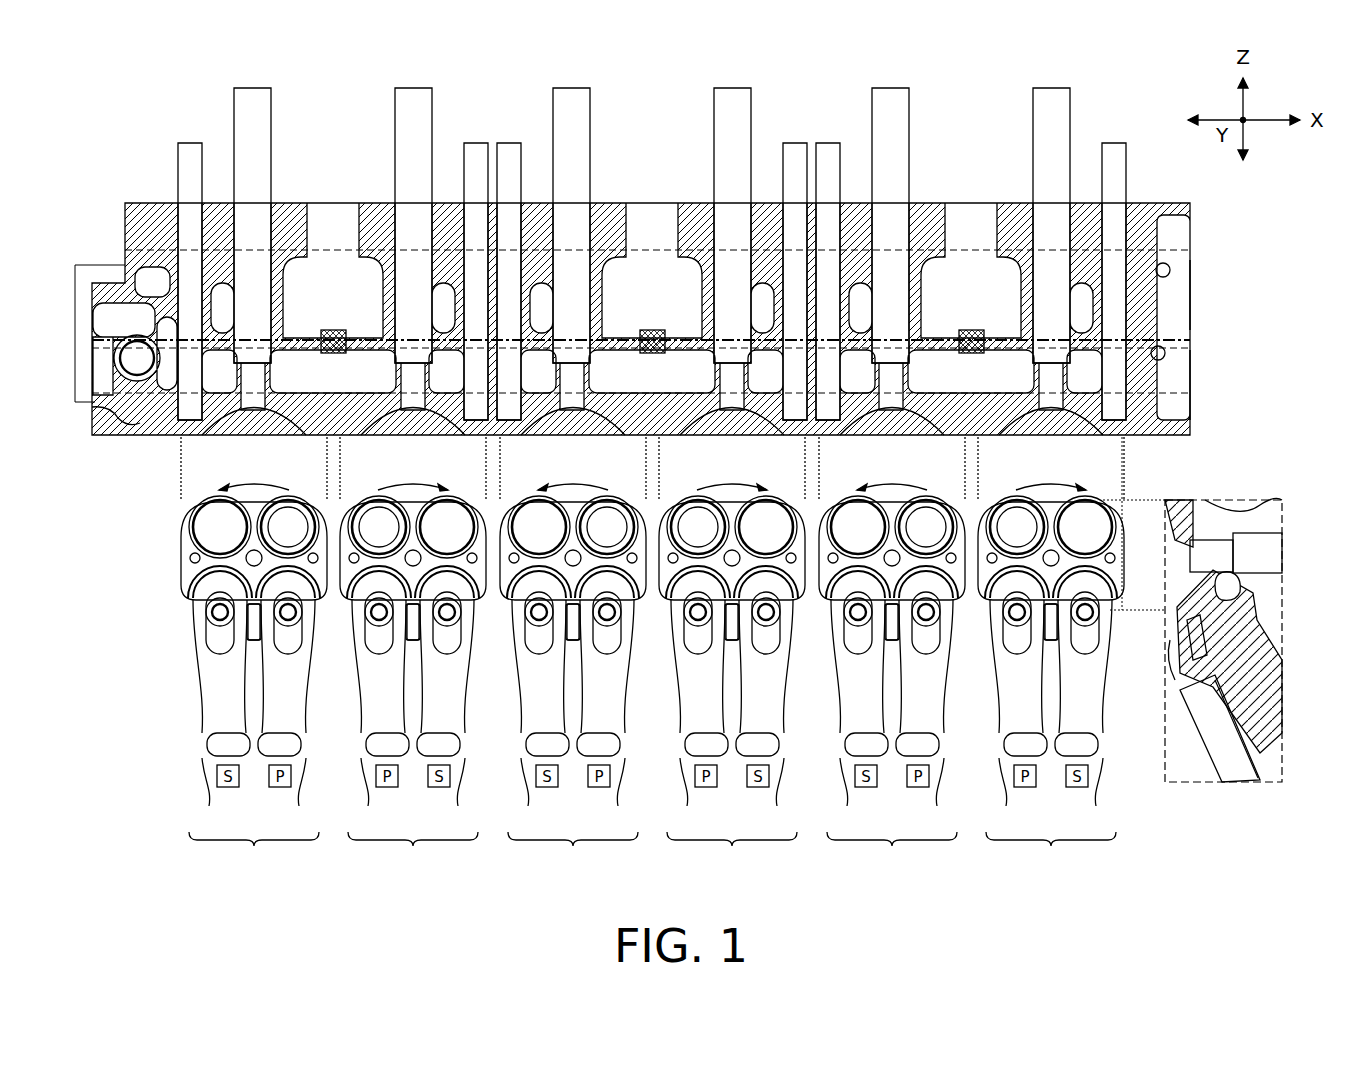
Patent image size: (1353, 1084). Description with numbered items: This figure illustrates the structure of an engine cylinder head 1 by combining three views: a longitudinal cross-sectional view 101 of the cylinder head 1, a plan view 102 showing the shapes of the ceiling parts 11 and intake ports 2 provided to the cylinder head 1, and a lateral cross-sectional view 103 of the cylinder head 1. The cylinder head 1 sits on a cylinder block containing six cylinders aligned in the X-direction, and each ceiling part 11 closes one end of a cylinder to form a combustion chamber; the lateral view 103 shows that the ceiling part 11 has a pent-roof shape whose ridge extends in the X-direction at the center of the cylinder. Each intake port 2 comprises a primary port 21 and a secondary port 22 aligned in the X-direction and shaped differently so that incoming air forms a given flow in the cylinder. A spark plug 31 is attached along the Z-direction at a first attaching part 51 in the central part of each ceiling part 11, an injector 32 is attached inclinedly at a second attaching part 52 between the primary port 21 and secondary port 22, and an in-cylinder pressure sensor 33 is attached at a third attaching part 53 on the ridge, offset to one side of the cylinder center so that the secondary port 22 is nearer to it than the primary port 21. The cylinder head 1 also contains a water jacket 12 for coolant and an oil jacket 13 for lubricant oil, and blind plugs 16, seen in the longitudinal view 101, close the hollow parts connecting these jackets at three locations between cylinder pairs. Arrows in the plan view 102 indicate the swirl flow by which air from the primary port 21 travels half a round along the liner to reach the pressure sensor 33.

The cylinder head 1 is at (1186, 202).
The intake port 2 is at (652, 858).
The ceiling part 11 is at (276, 425).
The water jacket 12 is at (1192, 388).
The oil jacket 13 is at (1192, 300).
The blind plug 16 is at (333, 328).
The primary port 21 is at (652, 717).
The secondary port 22 is at (652, 717).
The spark plug 31 is at (395, 148).
The injector 32 is at (1250, 772).
The in-cylinder pressure sensor 33 is at (200, 143).
The first attaching part 51 is at (268, 529).
The second attaching part 52 is at (406, 655).
The third attaching part 53 is at (208, 524).
The longitudinal cross-sectional view 101 is at (142, 126).
The plan view 102 is at (158, 646).
The lateral cross-sectional view 103 is at (1224, 500).